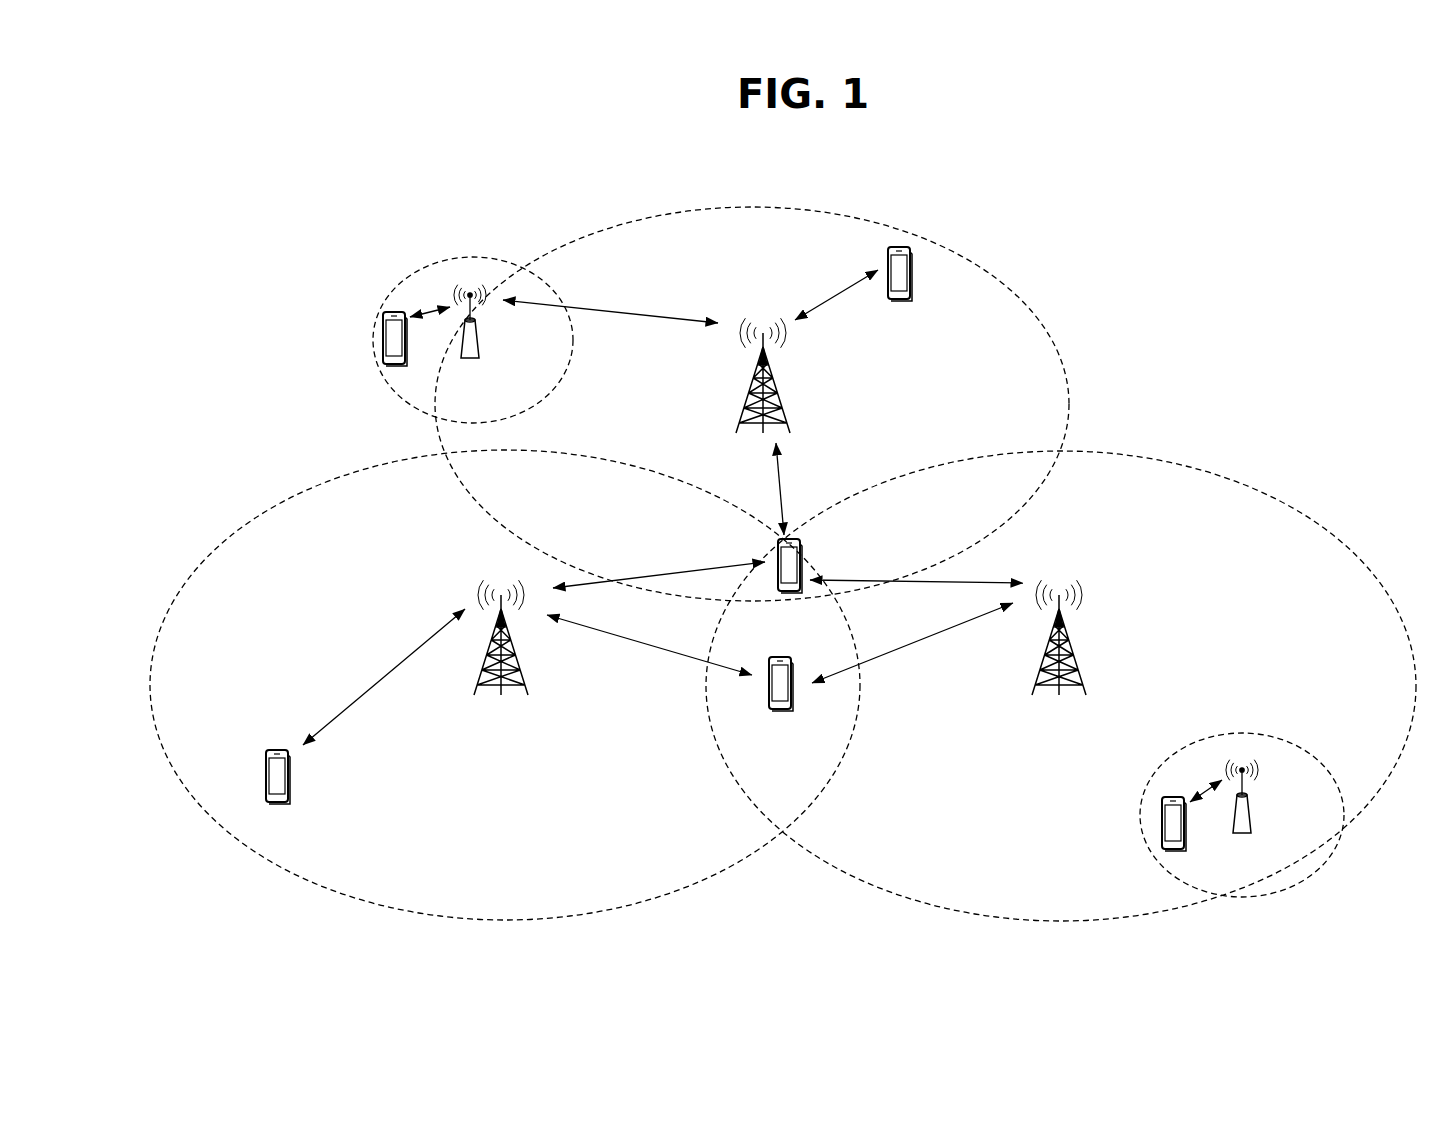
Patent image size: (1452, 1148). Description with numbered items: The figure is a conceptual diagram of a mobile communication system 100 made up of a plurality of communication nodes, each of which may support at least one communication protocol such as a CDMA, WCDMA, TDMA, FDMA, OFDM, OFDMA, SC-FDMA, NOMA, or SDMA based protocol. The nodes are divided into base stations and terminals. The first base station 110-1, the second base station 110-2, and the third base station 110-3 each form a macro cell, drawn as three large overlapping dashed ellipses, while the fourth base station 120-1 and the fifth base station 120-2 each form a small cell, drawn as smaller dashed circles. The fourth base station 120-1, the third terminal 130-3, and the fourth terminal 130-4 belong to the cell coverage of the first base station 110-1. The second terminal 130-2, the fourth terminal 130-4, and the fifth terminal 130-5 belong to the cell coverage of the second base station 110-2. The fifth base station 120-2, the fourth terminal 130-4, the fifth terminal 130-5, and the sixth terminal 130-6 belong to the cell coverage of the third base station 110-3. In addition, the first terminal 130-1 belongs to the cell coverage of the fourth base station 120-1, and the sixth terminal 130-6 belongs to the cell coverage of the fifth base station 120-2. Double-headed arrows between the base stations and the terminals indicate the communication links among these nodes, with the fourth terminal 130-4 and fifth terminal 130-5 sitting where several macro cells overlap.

The communication system 100 is at (769, 174).
The first base station 110-1 is at (772, 386).
The second base station 110-2 is at (501, 700).
The third base station 110-3 is at (1070, 651).
The fourth base station 120-1 is at (478, 335).
The fifth base station 120-2 is at (1251, 805).
The first terminal 130-1 is at (383, 336).
The second terminal 130-2 is at (290, 775).
The third terminal 130-3 is at (912, 280).
The fourth terminal 130-4 is at (801, 548).
The fifth terminal 130-5 is at (787, 658).
The sixth terminal 130-6 is at (1162, 822).